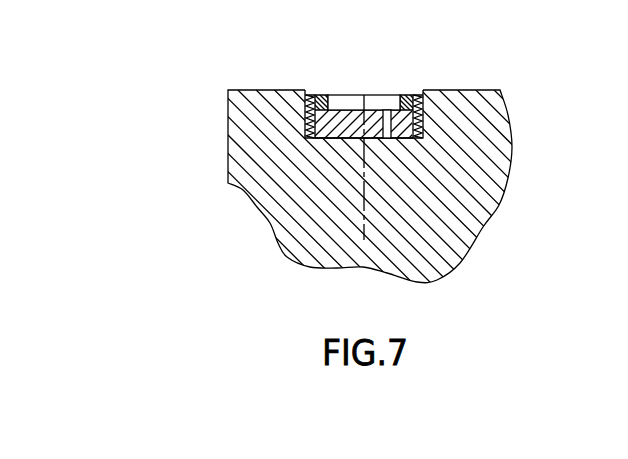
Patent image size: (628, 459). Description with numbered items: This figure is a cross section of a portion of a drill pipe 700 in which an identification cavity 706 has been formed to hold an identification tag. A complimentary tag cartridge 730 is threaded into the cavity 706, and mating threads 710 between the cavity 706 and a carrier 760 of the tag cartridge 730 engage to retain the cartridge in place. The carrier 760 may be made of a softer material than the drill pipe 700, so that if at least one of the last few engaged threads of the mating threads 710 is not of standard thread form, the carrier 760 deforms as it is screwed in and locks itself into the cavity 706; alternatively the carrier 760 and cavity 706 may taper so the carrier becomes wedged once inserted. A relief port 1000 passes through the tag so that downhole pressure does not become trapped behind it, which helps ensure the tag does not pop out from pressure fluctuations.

The drill pipe 700 is at (263, 88).
The identification cavity 706 is at (313, 133).
The mating threads 710 is at (424, 116).
The tag cartridge 730 is at (377, 88).
The carrier 760 is at (316, 95).
The relief port 1000 is at (398, 119).